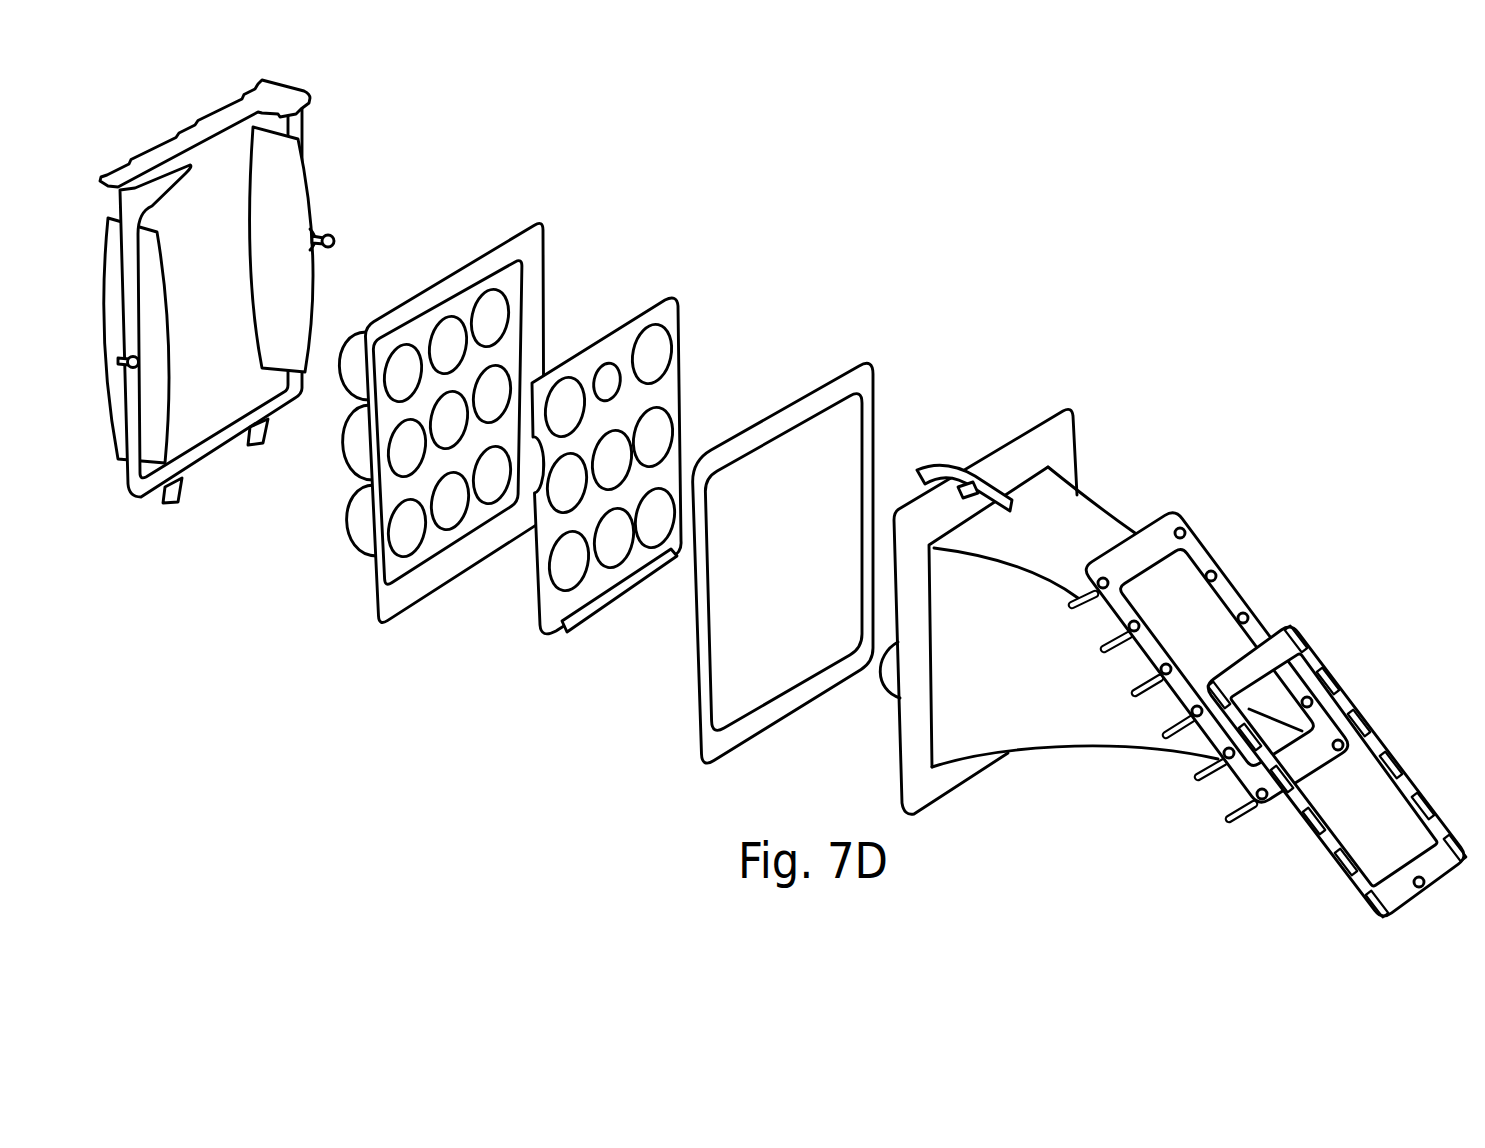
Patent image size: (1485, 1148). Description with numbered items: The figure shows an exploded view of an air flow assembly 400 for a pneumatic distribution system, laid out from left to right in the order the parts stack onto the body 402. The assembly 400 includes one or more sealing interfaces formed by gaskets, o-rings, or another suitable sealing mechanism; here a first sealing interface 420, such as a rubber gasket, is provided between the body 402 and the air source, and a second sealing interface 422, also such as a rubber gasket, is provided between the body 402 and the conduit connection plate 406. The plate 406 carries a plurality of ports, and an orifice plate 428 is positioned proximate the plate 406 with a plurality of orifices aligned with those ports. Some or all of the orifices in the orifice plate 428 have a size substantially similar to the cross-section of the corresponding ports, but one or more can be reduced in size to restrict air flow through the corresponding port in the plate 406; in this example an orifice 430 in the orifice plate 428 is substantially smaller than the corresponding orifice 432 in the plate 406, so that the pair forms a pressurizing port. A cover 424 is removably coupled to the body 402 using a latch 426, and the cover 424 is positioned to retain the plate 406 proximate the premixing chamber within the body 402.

The assembly 400 is at (922, 250).
The body 402 is at (1114, 606).
The conduit connection plate 406 is at (436, 398).
The sealing interface 420 is at (1357, 697).
The sealing interface 422 is at (871, 366).
The cover 424 is at (309, 184).
The latch 426 is at (947, 465).
The orifice plate 428 is at (606, 431).
The orifice 430 is at (603, 363).
The orifice 432 is at (440, 319).